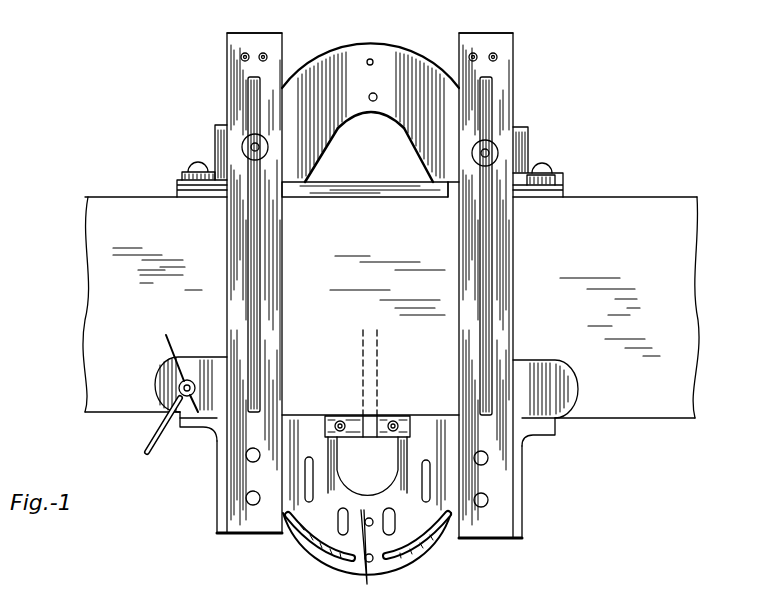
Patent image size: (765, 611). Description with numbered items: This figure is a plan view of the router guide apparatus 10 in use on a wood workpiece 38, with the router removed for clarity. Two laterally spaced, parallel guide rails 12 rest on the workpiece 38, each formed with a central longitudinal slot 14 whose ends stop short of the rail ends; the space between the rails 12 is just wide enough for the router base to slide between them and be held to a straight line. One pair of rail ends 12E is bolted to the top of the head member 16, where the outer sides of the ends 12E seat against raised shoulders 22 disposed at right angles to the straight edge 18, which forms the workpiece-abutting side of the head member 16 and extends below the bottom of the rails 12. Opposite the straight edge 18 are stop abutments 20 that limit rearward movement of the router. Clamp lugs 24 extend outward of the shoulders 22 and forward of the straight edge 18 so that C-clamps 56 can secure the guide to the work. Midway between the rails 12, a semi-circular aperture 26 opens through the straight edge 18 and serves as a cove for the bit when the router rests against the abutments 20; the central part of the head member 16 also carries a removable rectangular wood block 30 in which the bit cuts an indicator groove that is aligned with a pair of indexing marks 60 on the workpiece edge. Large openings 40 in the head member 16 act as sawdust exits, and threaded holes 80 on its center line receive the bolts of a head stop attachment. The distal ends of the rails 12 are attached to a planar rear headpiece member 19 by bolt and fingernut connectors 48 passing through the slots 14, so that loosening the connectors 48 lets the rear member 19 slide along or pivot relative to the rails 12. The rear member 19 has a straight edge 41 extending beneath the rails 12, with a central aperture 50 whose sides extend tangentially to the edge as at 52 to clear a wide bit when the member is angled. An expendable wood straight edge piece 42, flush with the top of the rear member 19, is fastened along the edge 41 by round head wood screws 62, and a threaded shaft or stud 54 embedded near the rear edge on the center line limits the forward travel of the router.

The guide apparatus 10 is at (514, 77).
The guide rails 12 is at (281, 282).
The ends of guide rails 12E is at (240, 485).
The central longitudinal slot 14 is at (248, 258).
The head member 16 is at (443, 544).
The straight edge 18 is at (298, 414).
The rear headpiece member 19 is at (320, 68).
The stop abutments 20 is at (400, 556).
The raised shoulders 22 is at (217, 462).
The clamp lugs 24 is at (160, 380).
The semi-circular aperture 26 is at (378, 465).
The rectangular wood block 30 is at (383, 420).
The workpiece 38 is at (680, 247).
The openings 40 is at (336, 526).
The straight edge of rear member 41 is at (208, 193).
The wood straight edge piece 42 is at (562, 193).
The fingernut connectors 48 is at (264, 143).
The aperture 50 is at (397, 148).
The tangential extensions of aperture 52 is at (308, 181).
The shaft or stud 54 is at (372, 58).
The C-clamps 56 is at (150, 441).
The indexing marks 60 is at (366, 384).
The round head wood screws 62 is at (198, 163).
The threaded holes 80 is at (355, 558).